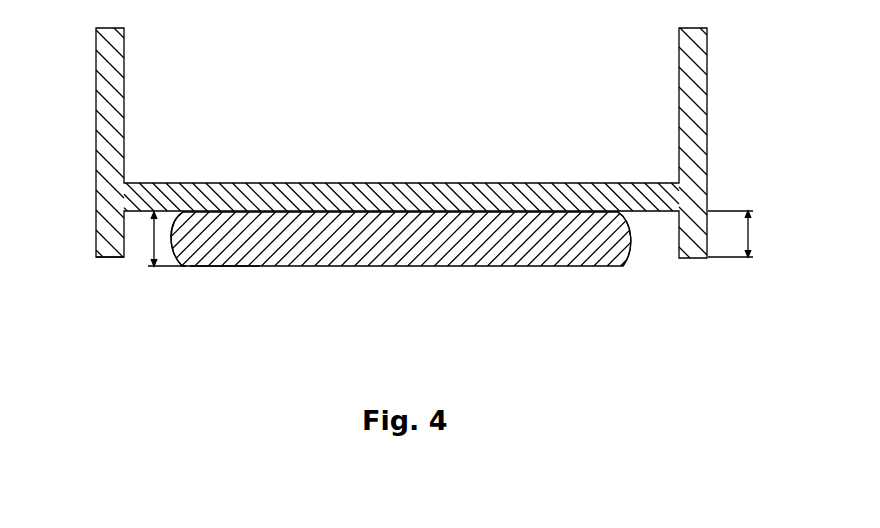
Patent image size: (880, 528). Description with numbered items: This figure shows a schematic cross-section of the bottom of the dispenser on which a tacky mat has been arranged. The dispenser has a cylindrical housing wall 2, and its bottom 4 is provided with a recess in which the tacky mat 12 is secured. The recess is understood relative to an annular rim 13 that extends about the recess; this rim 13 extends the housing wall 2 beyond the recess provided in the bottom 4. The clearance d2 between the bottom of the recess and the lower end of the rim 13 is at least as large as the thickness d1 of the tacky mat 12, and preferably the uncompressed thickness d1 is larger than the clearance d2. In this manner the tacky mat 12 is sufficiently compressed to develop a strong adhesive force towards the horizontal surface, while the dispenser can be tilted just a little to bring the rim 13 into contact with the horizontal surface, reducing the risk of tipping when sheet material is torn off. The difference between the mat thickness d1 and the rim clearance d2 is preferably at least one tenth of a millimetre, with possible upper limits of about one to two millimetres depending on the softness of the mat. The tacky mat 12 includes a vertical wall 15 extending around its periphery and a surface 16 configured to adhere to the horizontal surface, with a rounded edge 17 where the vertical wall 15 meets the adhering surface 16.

The cylindrical housing wall 2 is at (94, 126).
The bottom 4 is at (653, 213).
The tacky mat 12 is at (410, 267).
The annular rim 13 is at (99, 258).
The vertical wall 15 is at (632, 250).
The surface 16 is at (225, 267).
The rounded edge 17 is at (182, 264).
The thickness of the tacky mat d1 is at (150, 240).
The clearance d2 is at (743, 234).